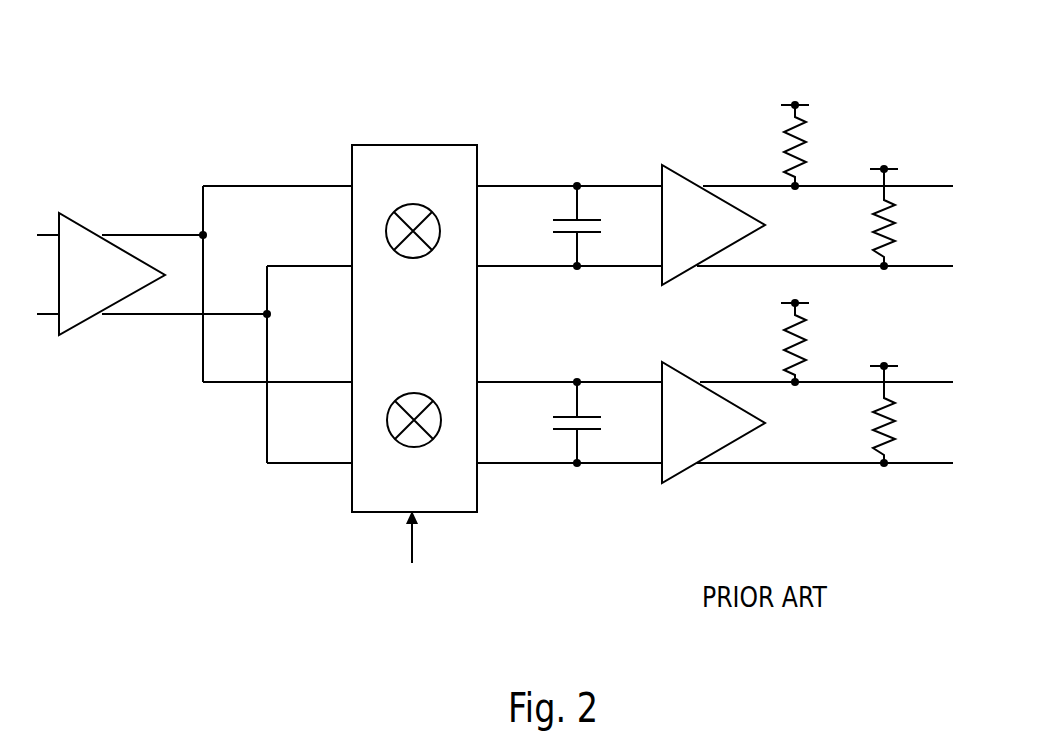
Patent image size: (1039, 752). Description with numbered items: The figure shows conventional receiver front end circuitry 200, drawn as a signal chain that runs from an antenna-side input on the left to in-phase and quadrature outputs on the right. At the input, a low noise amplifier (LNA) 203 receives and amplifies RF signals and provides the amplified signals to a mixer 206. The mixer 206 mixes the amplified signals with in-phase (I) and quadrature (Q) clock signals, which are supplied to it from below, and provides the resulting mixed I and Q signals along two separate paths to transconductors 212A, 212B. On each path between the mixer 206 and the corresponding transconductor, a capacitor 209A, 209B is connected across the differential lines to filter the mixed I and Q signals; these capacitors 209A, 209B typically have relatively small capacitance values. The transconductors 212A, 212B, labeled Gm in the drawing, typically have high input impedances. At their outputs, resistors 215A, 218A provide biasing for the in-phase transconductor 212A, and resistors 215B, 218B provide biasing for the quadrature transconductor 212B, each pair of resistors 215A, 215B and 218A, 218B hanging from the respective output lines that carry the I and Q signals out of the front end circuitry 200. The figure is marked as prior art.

The front end circuitry 200 is at (688, 54).
The low noise amplifier 203 is at (57, 325).
The mixer 206 is at (402, 144).
The capacitor 209A is at (563, 216).
The capacitor 209B is at (561, 414).
The transconductor 212A is at (662, 280).
The transconductor 212B is at (662, 478).
The resistor 215A is at (787, 123).
The resistor 215B is at (787, 321).
The resistor 218A is at (877, 207).
The resistor 218B is at (877, 405).